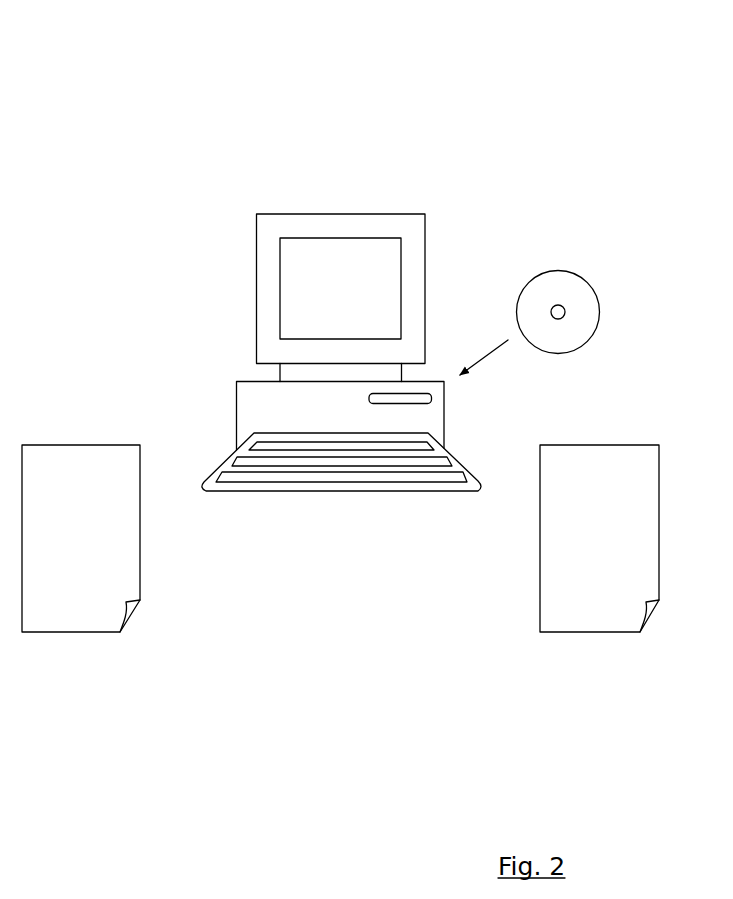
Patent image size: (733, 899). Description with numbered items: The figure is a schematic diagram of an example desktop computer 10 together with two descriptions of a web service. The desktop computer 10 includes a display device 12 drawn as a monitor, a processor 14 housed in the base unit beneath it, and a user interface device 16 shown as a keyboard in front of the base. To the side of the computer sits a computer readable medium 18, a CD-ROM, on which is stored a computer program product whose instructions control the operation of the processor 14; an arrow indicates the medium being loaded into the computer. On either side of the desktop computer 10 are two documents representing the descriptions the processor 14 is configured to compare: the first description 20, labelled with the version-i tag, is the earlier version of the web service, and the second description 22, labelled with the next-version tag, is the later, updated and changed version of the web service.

The desktop computer 10 is at (163, 107).
The display device 12 is at (425, 235).
The processor 14 is at (236, 400).
The user interface device 16 is at (328, 492).
The computer readable medium 18 is at (600, 307).
The first description 20 is at (80, 633).
The second description 22 is at (588, 633).